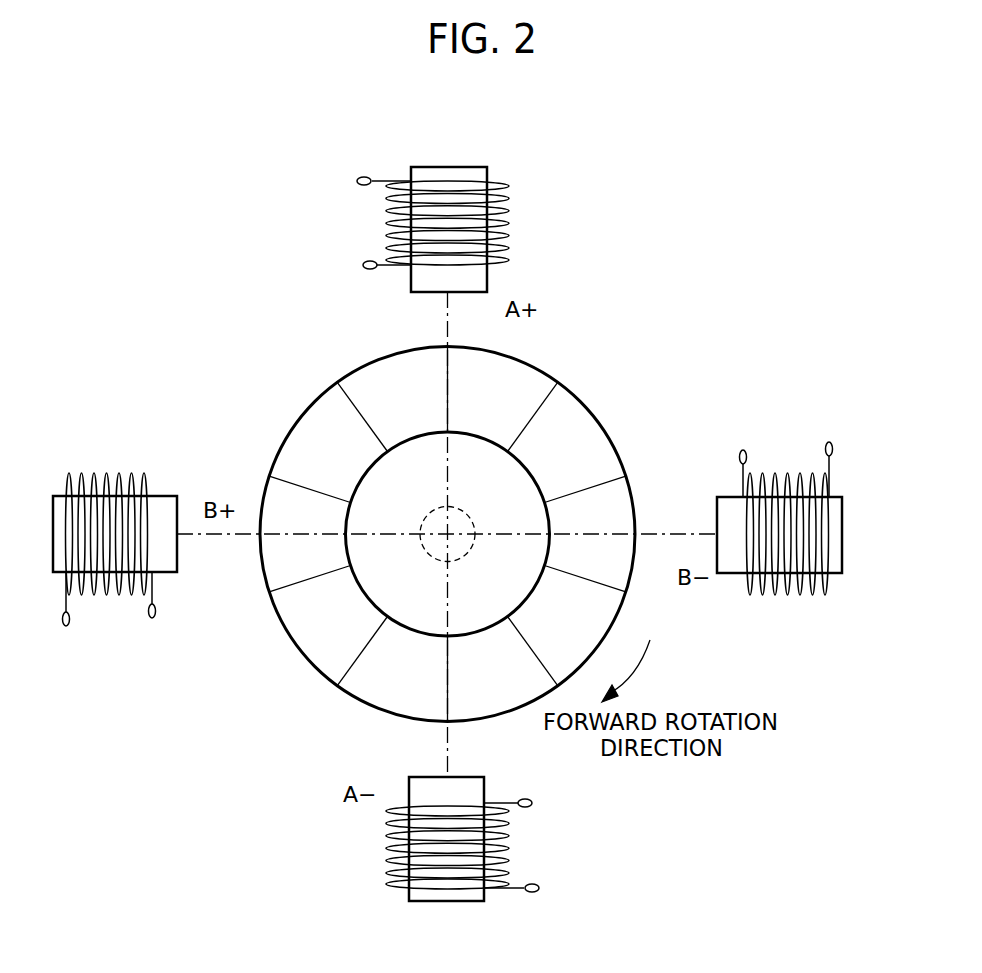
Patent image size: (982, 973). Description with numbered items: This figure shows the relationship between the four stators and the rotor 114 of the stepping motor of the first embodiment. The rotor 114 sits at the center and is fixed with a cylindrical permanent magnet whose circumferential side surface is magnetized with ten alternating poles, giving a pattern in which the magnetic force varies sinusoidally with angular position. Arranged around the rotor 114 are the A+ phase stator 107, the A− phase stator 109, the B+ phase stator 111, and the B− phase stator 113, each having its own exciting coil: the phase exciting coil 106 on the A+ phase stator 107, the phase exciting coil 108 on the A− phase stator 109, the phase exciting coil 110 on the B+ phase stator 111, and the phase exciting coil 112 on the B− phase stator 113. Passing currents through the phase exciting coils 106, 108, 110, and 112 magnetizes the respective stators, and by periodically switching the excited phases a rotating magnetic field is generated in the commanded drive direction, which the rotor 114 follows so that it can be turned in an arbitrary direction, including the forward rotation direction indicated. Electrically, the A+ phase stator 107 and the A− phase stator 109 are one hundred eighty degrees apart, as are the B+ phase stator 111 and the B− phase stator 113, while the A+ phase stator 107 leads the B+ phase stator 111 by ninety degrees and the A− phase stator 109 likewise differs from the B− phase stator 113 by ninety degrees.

The phase exciting coil 106 is at (362, 265).
The A+ phase stator 107 is at (487, 283).
The phase exciting coil 108 is at (540, 888).
The A− phase stator 109 is at (409, 789).
The phase exciting coil 110 is at (152, 619).
The B+ phase stator 111 is at (177, 501).
The phase exciting coil 112 is at (826, 449).
The B− phase stator 113 is at (729, 573).
The rotor 114 is at (587, 402).